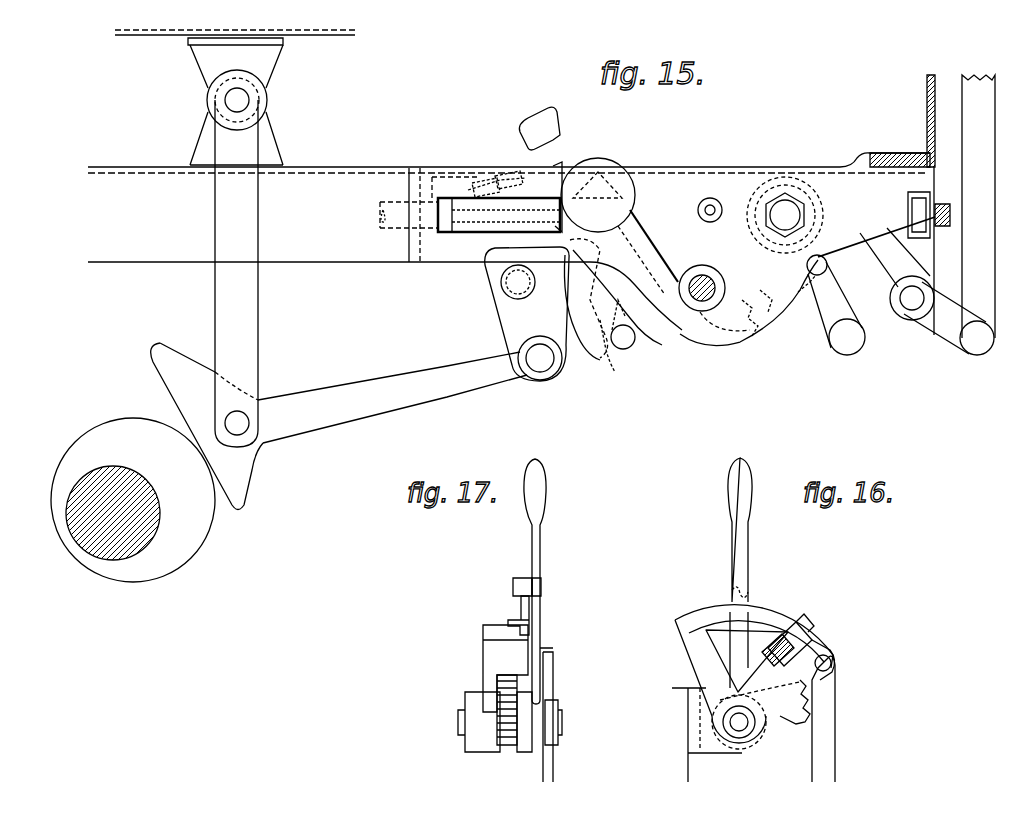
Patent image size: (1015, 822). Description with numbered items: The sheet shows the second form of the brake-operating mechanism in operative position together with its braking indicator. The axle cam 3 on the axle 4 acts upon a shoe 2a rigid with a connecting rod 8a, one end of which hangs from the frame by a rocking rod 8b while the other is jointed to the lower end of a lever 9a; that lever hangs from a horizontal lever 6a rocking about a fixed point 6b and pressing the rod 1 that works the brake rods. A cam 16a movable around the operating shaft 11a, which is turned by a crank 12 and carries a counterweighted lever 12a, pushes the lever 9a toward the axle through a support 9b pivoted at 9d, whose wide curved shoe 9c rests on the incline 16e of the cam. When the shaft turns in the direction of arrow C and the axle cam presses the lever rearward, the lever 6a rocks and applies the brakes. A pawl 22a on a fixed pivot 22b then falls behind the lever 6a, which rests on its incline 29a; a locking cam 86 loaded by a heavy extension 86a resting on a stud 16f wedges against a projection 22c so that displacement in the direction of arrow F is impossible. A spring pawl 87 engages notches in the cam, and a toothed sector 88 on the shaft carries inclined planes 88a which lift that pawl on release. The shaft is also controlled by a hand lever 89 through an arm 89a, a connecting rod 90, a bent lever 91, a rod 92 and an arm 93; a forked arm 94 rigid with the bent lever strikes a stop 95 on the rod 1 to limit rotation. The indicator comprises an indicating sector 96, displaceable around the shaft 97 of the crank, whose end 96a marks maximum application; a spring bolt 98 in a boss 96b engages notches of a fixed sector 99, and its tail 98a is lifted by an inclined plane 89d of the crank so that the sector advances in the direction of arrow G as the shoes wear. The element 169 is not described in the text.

In FIG. 15, the rod 1 is at (940, 226).
In FIG. 15, the shoe 2a is at (207, 426).
In FIG. 15, the axle cam 3 is at (133, 500).
In FIG. 15, the axle 4 is at (111, 474).
In FIG. 15, the horizontal lever 6a is at (441, 205).
In FIG. 15, the fixed point 6b is at (478, 236).
In FIG. 15, the connecting rod 8a is at (366, 386).
In FIG. 15, the rocking rod 8b is at (236, 273).
In FIG. 15, the lever 9a is at (527, 314).
In FIG. 15, the support 9b is at (540, 349).
In FIG. 15, the curved shoe 9c is at (580, 290).
In FIG. 15, the pivot 9d is at (515, 282).
In FIG. 15, the operating shaft 11a is at (700, 300).
In FIG. 15, the crank 12 is at (547, 136).
In FIG. 15, the counterweighted lever 12a is at (652, 215).
In FIG. 15, the cam 16a is at (641, 339).
In FIG. 15, the incline 16e is at (592, 330).
In FIG. 15, the stud 16f is at (630, 350).
In FIG. 15, the pawl 22a is at (578, 180).
In FIG. 15, the fixed pivot 22b is at (785, 212).
In FIG. 15, the projection 22c is at (822, 272).
In FIG. 15, the incline 29a is at (520, 215).
In FIG. 15, the locking cam 86 is at (755, 330).
In FIG. 15, the heavy extension 86a is at (617, 346).
In FIG. 15, the spring pawl 87 is at (800, 292).
In FIG. 15, the toothed sector 88 is at (690, 344).
In FIG. 15, the inclined planes 88a is at (725, 345).
In FIG. 16, the hand lever 89 is at (742, 545).
In FIG. 17, the hand lever 89 is at (540, 552).
In FIG. 16, the arm 89a is at (836, 682).
In FIG. 17, the arm 89a is at (536, 690).
In FIG. 16, the inclined plane 89d is at (745, 592).
In FIG. 17, the inclined plane 89d is at (522, 586).
In FIG. 15, the connecting rod 90 is at (978, 206).
In FIG. 16, the connecting rod 90 is at (838, 752).
In FIG. 17, the connecting rod 90 is at (548, 764).
In FIG. 15, the bent lever 91 is at (942, 328).
In FIG. 15, the rod 92 is at (828, 336).
In FIG. 15, the arm 93 is at (693, 213).
In FIG. 15, the forked arm 94 is at (897, 274).
In FIG. 15, the stop 95 is at (930, 198).
In FIG. 16, the indicating sector 96 is at (708, 620).
In FIG. 17, the indicating sector 96 is at (518, 590).
In FIG. 16, the end of sector 96a is at (834, 652).
In FIG. 16, the boss 96b is at (798, 632).
In FIG. 17, the boss 96b is at (505, 668).
In FIG. 16, the shaft 97 is at (740, 728).
In FIG. 17, the shaft 97 is at (462, 722).
In FIG. 16, the spring bolt 98 is at (777, 648).
In FIG. 16, the tail of bolt 98a is at (812, 628).
In FIG. 17, the tail of bolt 98a is at (510, 622).
In FIG. 16, the fixed sector 99 is at (798, 722).
In FIG. 17, the fixed sector 99 is at (512, 715).
In FIG. 15, the tooth 169 is at (772, 312).
In FIG. 15, the arrow F is at (651, 118).
In FIG. 15, the arrow C is at (745, 392).
In FIG. 16, the arrow G is at (878, 540).